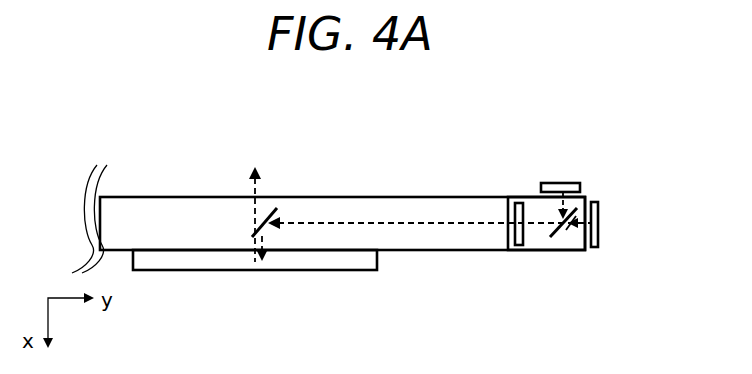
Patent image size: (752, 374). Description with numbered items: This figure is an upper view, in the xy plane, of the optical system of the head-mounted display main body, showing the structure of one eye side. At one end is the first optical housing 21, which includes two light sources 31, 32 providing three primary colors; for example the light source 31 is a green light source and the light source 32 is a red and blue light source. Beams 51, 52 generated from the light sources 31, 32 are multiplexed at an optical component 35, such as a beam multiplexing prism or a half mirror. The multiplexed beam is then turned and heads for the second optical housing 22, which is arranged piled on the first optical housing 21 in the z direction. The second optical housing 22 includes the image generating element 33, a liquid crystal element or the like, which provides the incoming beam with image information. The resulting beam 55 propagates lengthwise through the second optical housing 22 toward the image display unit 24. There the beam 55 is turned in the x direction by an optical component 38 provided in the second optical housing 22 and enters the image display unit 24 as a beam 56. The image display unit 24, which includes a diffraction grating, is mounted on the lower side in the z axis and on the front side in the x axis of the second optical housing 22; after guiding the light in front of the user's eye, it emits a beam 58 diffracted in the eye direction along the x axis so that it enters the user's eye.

The first optical housing 21 is at (587, 197).
The second optical housing 22 is at (352, 197).
The image display unit 24 is at (208, 270).
The light source 31 is at (600, 223).
The light source 32 is at (565, 182).
The image generating element 33 is at (523, 250).
The optical component 35 is at (558, 233).
The optical component 38 is at (277, 203).
The beam 51 is at (573, 230).
The beam 52 is at (560, 213).
The beam 55 is at (442, 222).
The beam 56 is at (262, 240).
The beam 58 is at (253, 188).